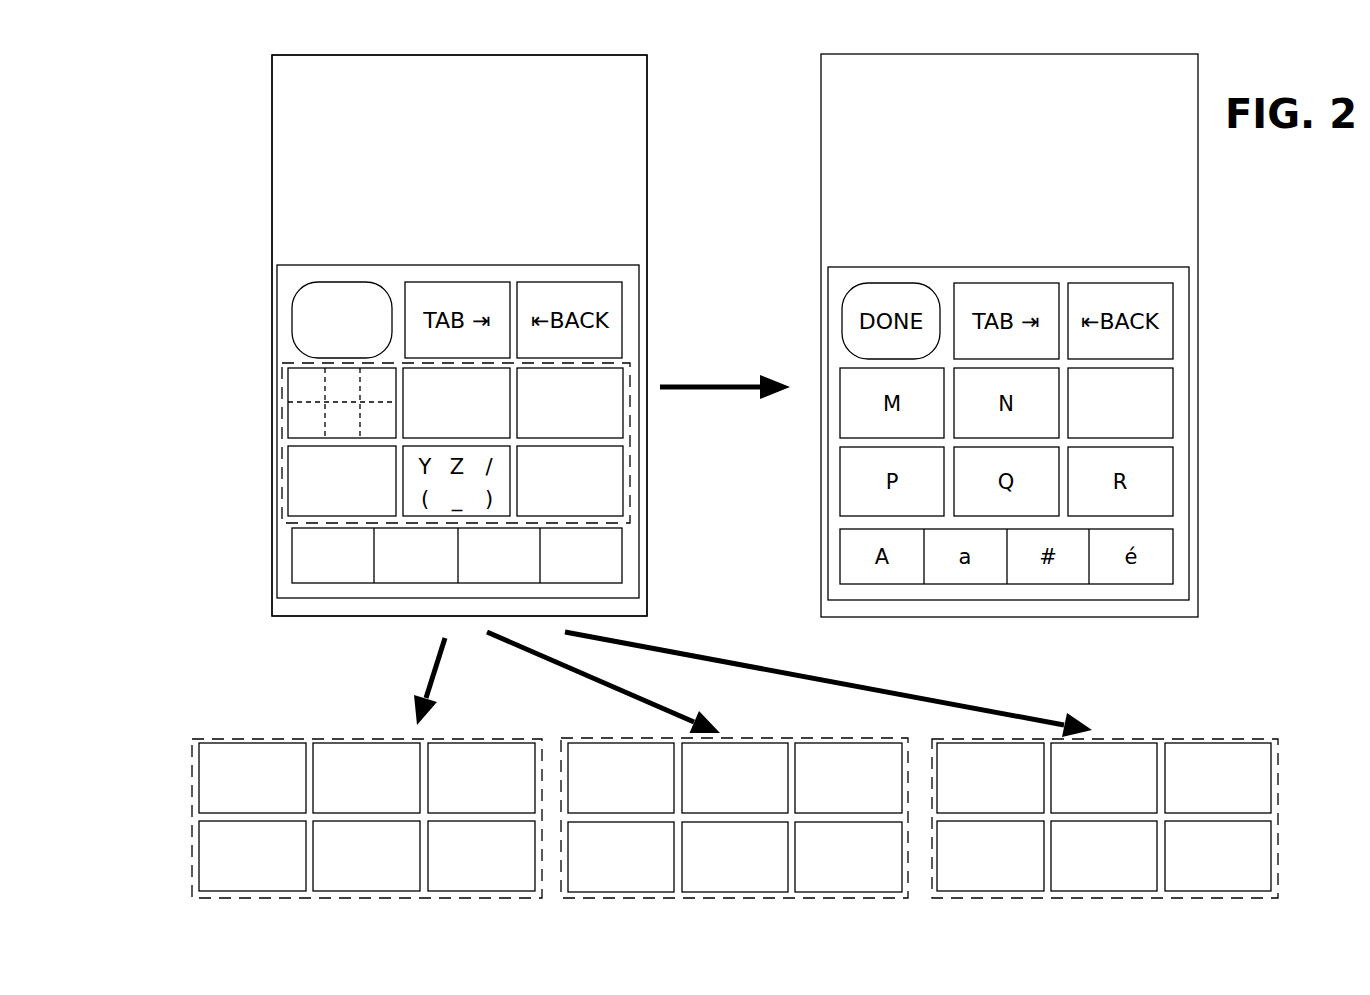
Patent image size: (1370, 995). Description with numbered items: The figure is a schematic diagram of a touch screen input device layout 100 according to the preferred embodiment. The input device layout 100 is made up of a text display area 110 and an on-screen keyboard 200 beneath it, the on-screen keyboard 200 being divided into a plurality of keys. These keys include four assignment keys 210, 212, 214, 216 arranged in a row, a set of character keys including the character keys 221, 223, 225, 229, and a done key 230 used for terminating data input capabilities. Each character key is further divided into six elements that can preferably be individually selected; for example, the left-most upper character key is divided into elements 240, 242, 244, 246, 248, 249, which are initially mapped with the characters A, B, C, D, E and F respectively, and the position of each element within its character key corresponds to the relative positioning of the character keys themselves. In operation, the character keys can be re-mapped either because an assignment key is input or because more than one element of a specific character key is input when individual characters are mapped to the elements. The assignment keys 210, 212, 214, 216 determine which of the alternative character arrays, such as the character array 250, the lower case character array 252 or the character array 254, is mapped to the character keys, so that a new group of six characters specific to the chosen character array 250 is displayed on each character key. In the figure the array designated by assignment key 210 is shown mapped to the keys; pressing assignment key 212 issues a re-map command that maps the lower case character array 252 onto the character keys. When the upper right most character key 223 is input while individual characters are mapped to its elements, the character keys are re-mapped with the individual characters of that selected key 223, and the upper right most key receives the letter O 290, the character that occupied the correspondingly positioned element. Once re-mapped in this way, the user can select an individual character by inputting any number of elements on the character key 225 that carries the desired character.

The touch screen input device layout 100 is at (258, 150).
The text display area 110 is at (557, 120).
The on-screen keyboard 200 is at (435, 265).
The assignment key 210 is at (451, 612).
The assignment key 212 is at (420, 585).
The assignment key 214 is at (490, 585).
The assignment key 216 is at (622, 557).
The character key 221 is at (493, 368).
The character key 223 is at (617, 375).
The character key 225 is at (288, 487).
The character key 229 is at (622, 475).
The done key 230 is at (331, 282).
The element 240 is at (282, 428).
The element 242 is at (372, 372).
The element 244 is at (325, 372).
The element 246 is at (295, 418).
The element 248 is at (334, 427).
The element 249 is at (362, 428).
The character array 250 is at (630, 383).
The lower case character array 252 is at (330, 739).
The character array 254 is at (853, 738).
The letter O 290 is at (1127, 401).